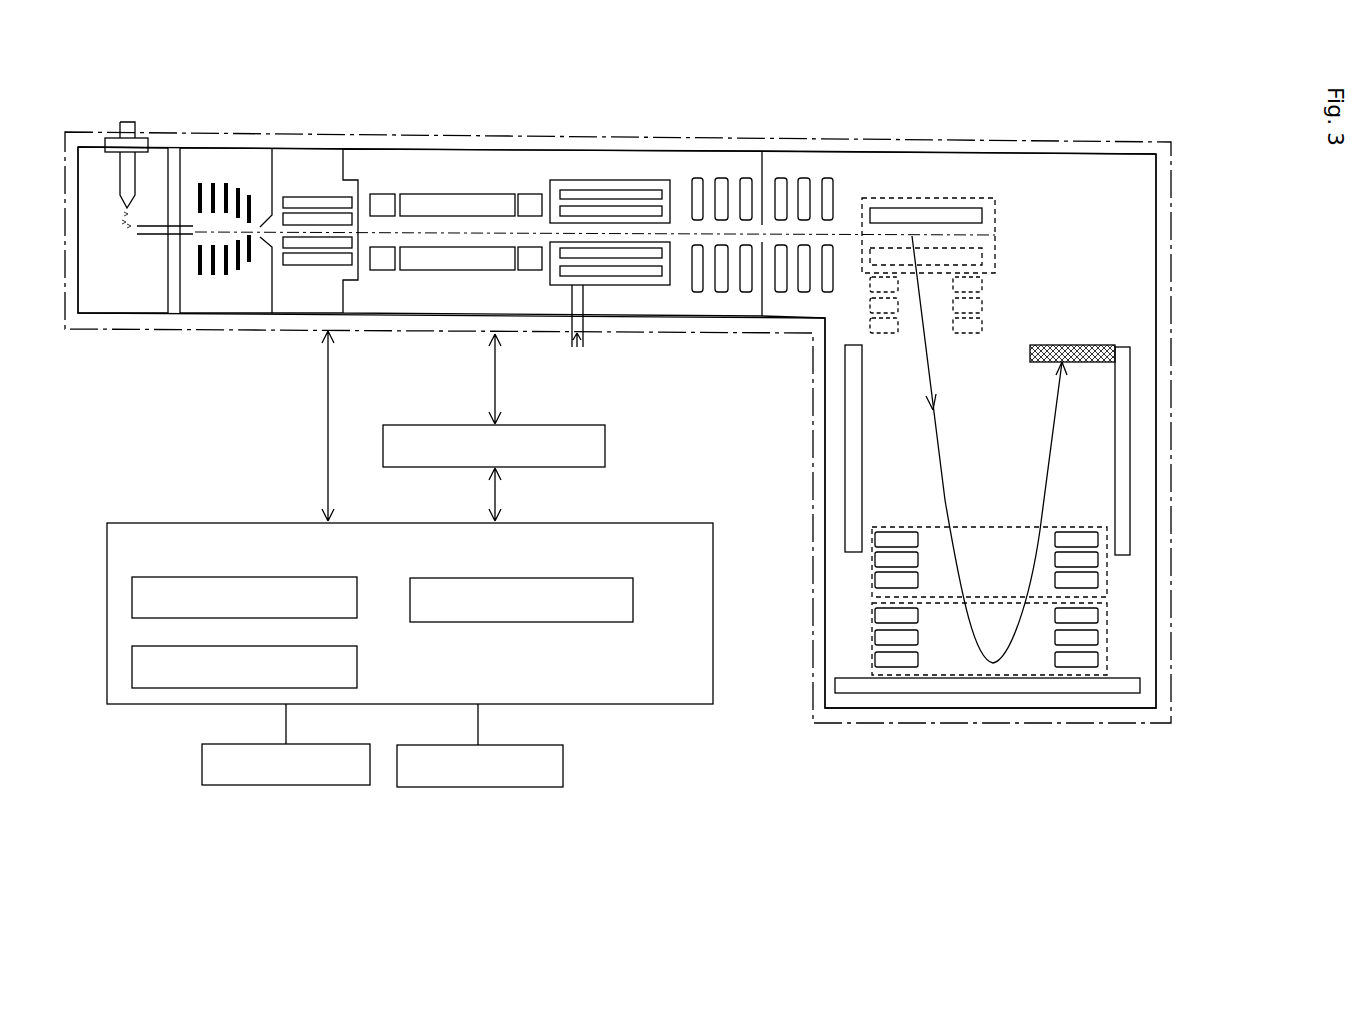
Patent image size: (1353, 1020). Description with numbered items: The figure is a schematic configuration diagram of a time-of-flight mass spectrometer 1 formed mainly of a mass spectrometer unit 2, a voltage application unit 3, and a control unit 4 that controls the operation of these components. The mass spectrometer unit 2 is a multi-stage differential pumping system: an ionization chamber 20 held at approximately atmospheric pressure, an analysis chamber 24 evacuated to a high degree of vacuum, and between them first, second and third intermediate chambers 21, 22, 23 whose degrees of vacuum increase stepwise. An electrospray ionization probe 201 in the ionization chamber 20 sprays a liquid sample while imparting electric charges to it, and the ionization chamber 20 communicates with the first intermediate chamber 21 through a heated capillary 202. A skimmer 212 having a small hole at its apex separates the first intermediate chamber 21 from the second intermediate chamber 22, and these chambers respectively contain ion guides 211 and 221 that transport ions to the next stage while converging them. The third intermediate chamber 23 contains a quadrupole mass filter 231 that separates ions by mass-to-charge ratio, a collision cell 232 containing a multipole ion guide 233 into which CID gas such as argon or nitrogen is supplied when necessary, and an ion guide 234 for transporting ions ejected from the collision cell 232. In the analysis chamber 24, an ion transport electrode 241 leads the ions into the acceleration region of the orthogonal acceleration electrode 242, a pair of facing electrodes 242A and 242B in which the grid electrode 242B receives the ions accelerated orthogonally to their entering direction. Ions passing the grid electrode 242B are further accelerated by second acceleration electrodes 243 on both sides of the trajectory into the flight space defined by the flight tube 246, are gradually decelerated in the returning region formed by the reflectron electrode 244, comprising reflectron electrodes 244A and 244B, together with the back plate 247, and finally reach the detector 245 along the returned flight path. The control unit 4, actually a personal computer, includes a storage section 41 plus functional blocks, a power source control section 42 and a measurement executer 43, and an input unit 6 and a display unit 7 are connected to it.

The time-of-flight mass spectrometer 1 is at (1259, 147).
The mass spectrometer unit 2 is at (1048, 137).
The voltage application unit 3 is at (605, 440).
The control unit 4 is at (717, 577).
The input unit 6 is at (200, 762).
The display unit 7 is at (565, 766).
The ionization chamber 20 is at (112, 303).
The first intermediate chamber 21 is at (197, 302).
The second intermediate chamber 22 is at (288, 302).
The third intermediate chamber 23 is at (423, 302).
The analysis chamber 24 is at (848, 327).
The storage section 41 is at (357, 597).
The power source control section 42 is at (633, 598).
The measurement executer 43 is at (357, 665).
The electrospray ionization probe 201 is at (116, 134).
The heated capillary 202 is at (157, 236).
The ion guide 211 is at (232, 187).
The skimmer 212 is at (263, 237).
The ion guide 221 is at (327, 195).
The quadrupole mass filter 231 is at (485, 192).
The collision cell 232 is at (628, 180).
The multipole ion guide 233 is at (575, 192).
The ion guide 234 is at (722, 170).
The ion transport electrode 241 is at (802, 170).
The orthogonal acceleration electrode 242 is at (998, 235).
The electrode 242A is at (982, 218).
The grid electrode 242B is at (982, 262).
The second acceleration electrode 243 is at (992, 277).
The reflectron electrode 244 is at (1093, 601).
The reflectron electrode 244A is at (1107, 530).
The reflectron electrode 244B is at (1107, 632).
The detector 245 is at (1088, 345).
The flight tube 246 is at (1130, 443).
The back plate 247 is at (1140, 685).